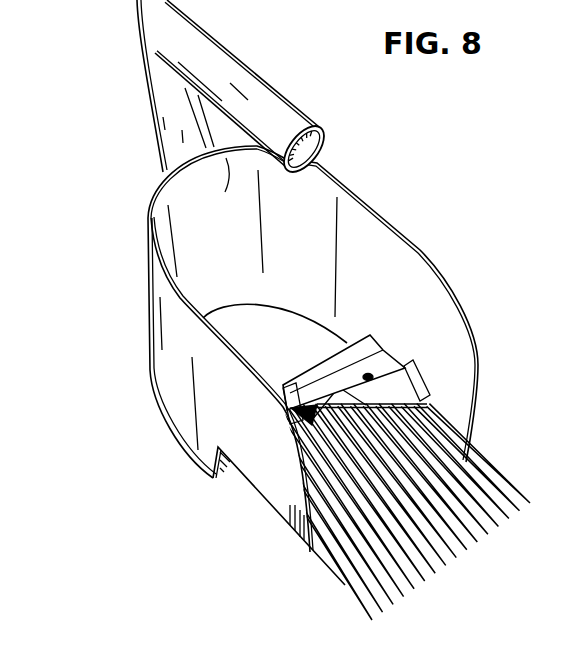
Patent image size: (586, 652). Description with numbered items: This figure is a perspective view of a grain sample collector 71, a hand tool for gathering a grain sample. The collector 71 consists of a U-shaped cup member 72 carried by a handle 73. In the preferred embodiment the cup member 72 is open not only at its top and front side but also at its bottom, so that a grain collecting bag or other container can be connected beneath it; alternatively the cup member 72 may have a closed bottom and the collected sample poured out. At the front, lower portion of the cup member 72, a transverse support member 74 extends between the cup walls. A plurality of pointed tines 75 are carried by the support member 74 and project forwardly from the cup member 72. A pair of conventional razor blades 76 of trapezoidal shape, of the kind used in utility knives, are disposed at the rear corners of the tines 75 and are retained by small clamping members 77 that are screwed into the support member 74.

The grain sample collector 71 is at (126, 189).
The U-shaped cup member 72 is at (167, 352).
The handle 73 is at (275, 107).
The transverse support member 74 is at (321, 363).
The pointed tines 75 is at (390, 600).
The razor blades 76 is at (291, 392).
The clamping members 77 is at (392, 358).